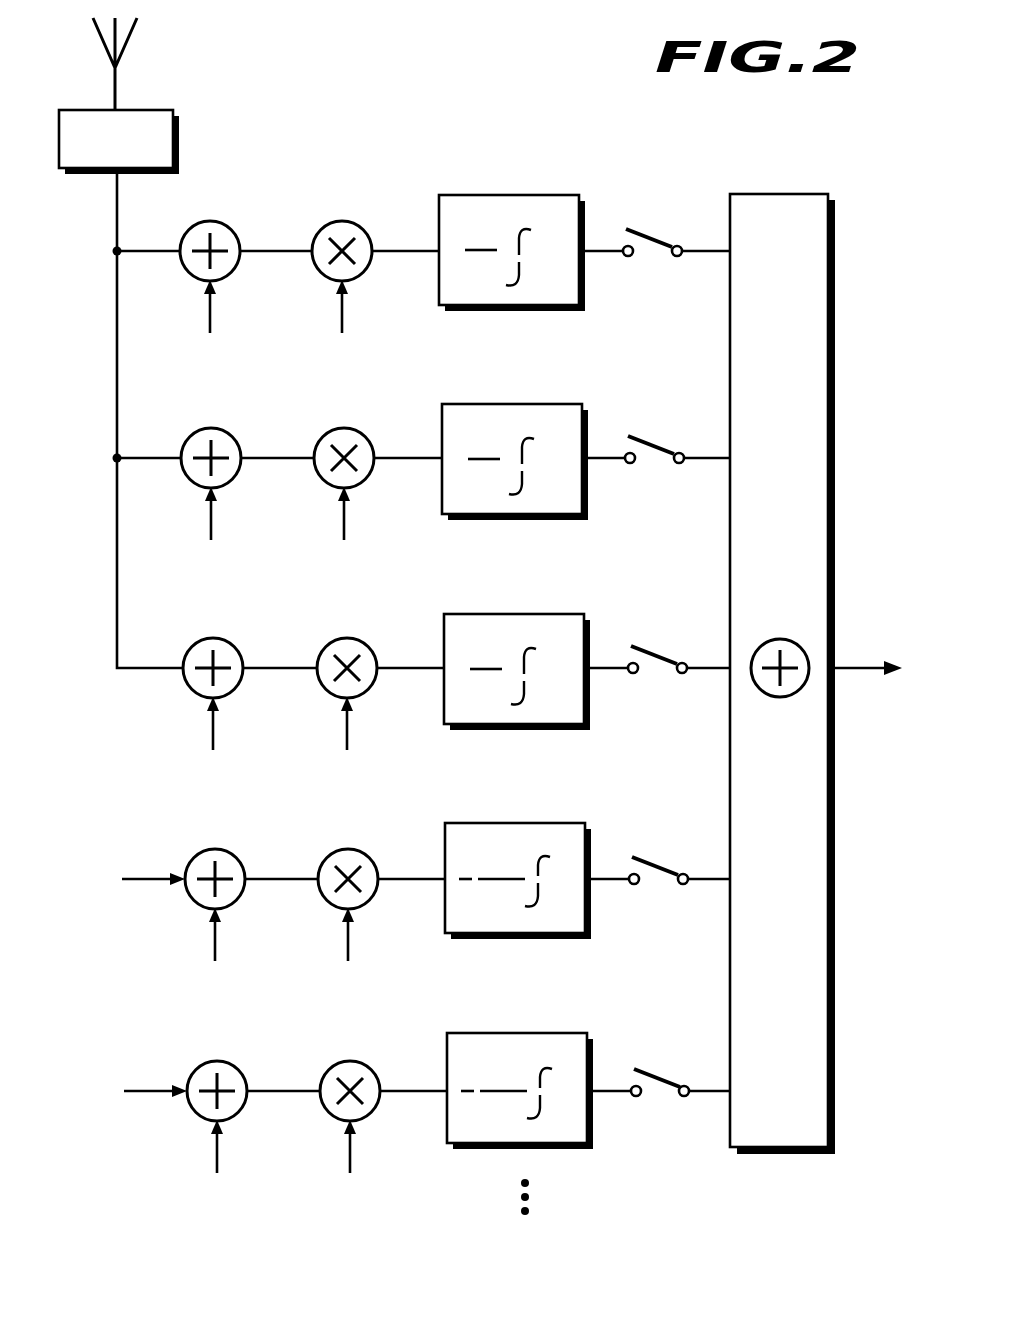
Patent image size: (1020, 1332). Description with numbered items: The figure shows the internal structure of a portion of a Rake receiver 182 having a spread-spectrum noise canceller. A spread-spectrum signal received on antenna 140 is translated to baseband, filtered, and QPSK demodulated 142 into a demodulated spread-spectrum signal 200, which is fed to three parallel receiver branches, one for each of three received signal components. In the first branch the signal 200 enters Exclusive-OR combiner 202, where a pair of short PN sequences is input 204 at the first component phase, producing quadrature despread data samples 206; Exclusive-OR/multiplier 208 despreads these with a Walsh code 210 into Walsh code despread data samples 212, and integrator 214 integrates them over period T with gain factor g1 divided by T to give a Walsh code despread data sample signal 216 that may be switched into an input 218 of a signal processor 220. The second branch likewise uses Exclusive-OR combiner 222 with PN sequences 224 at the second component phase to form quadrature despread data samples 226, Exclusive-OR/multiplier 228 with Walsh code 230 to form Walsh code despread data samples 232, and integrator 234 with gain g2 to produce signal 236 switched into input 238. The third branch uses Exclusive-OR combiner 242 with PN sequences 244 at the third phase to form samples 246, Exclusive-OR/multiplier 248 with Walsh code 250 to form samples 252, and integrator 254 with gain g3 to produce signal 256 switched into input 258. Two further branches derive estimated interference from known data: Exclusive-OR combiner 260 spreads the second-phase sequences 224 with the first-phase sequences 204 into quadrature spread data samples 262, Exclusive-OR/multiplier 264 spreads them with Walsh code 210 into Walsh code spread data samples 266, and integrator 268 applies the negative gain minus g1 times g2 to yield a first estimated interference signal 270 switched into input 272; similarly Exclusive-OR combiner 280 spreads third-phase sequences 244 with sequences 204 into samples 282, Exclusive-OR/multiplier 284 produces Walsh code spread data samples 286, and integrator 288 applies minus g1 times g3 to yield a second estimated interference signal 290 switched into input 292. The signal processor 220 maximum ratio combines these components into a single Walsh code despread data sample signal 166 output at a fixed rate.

The antenna 140 is at (132, 32).
The QPSK demodulator 142 is at (179, 128).
The demodulated spread-spectrum signal 200 is at (116, 218).
The Exclusive-OR combiner 202 is at (197, 226).
The pair of short PN sequences at first component phase 204 is at (208, 312).
The quadrature despread data samples 206 is at (270, 249).
The Exclusive-OR/multiplier 208 is at (345, 224).
The Walsh code at first signal component phase 210 is at (341, 324).
The Walsh code despread data samples 212 is at (401, 253).
The integrator 214 is at (587, 203).
The Walsh code despread data sample signal 216 is at (609, 254).
The input of signal processor 218 is at (655, 237).
The signal processor 220 is at (836, 270).
The Rake receiver 182 is at (638, 158).
The Walsh code despread data sample signal 166 is at (862, 660).
The Exclusive-OR combiner 222 is at (204, 414).
The pair of short PN sequences at second component phase 224 is at (209, 522).
The quadrature despread data samples 226 is at (272, 456).
The Exclusive-OR/multiplier 228 is at (347, 430).
The Walsh code at second signal component phase 230 is at (343, 531).
The Walsh code despread data samples 232 is at (403, 460).
The integrator 234 is at (590, 412).
The Walsh despread data sample signal 236 is at (611, 461).
The input of signal processor 238 is at (657, 444).
The Exclusive-OR combiner 242 is at (206, 626).
The pair of short PN sequences at third component phase 244 is at (211, 734).
The quadrature despread data samples 246 is at (281, 652).
The Exclusive-OR/multiplier 248 is at (350, 641).
The Walsh code at third signal component phase 250 is at (346, 741).
The Walsh code despread data samples 252 is at (407, 671).
The integrator 254 is at (592, 622).
The Walsh despread data sample signal 256 is at (613, 671).
The input of signal processor 258 is at (659, 654).
The Exclusive-OR combiner 260 is at (202, 855).
The quadrature spread data samples 262 is at (282, 862).
The Exclusive-OR/multiplier 264 is at (351, 850).
The Walsh code spread data samples 266 is at (409, 882).
The integrator 268 is at (593, 831).
The first estimated interference signal 270 is at (614, 882).
The input of signal processor 272 is at (660, 864).
The Exclusive-OR combiner 280 is at (204, 1067).
The quadrature spread data samples 282 is at (276, 1089).
The Exclusive-OR/multiplier 284 is at (353, 1062).
The Walsh code spread data samples 286 is at (411, 1094).
The integrator 288 is at (595, 1041).
The second estimated interference signal 290 is at (616, 1094).
The input of signal processor 292 is at (662, 1076).